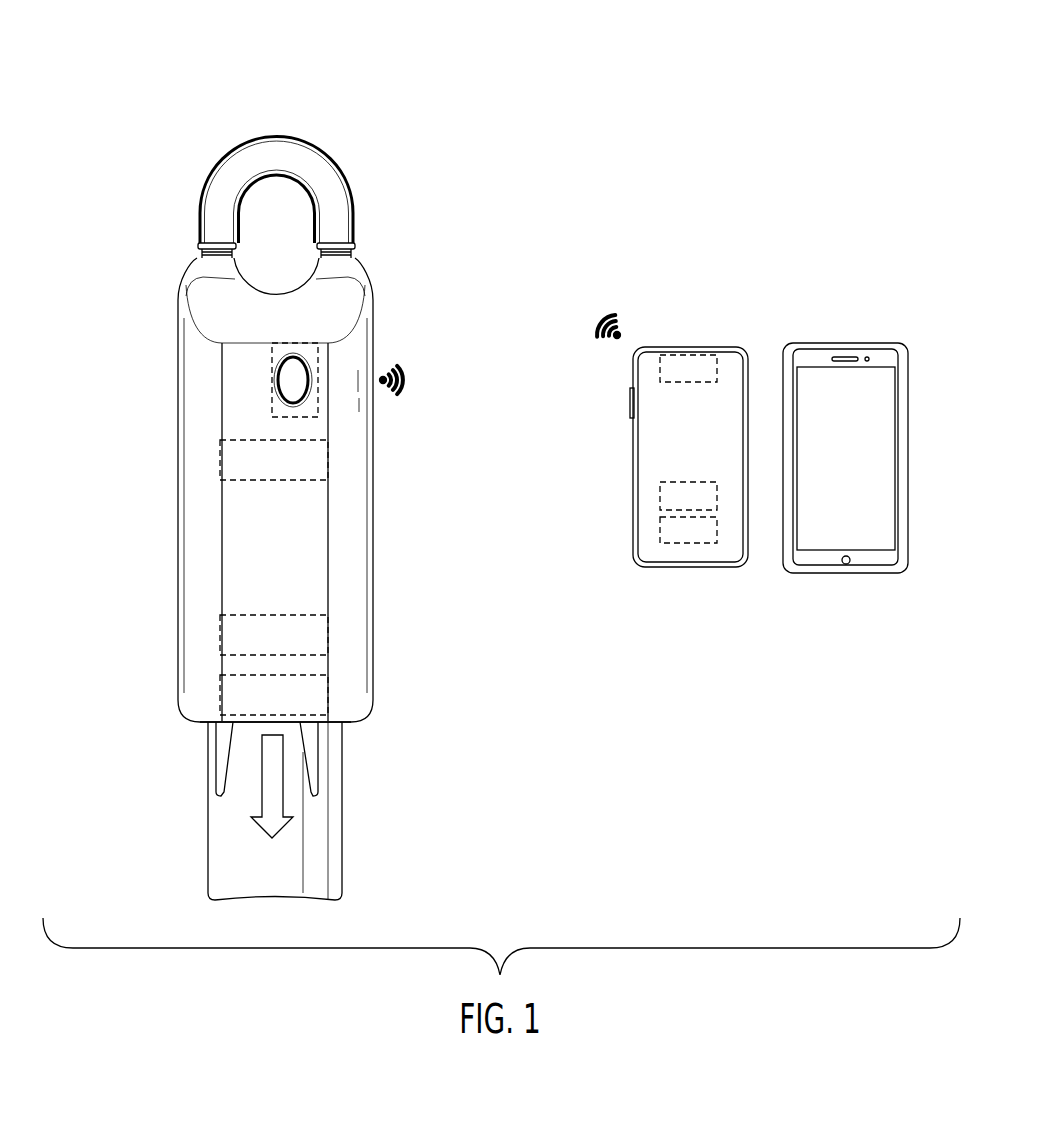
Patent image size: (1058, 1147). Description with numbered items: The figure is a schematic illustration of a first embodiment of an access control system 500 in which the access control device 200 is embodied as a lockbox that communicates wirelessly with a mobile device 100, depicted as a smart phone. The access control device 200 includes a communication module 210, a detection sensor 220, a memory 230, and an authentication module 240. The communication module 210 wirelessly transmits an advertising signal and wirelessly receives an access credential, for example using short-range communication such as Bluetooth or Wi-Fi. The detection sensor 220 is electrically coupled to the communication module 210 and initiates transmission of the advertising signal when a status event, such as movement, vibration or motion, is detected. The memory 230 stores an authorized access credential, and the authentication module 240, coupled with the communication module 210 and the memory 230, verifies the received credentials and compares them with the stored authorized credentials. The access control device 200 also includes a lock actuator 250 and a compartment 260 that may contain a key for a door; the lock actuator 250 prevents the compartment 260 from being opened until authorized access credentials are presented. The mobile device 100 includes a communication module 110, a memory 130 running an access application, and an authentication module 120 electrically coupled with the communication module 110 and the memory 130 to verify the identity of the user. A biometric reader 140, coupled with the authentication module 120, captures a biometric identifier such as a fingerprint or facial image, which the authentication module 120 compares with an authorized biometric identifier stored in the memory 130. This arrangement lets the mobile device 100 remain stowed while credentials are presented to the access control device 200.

The access control system 500 is at (357, 107).
The access control device 200 is at (128, 303).
The communication module 210 is at (313, 378).
The authentication module 240 is at (235, 462).
The memory 230 is at (317, 628).
The detection sensor 220 is at (245, 701).
The lock actuator 250 is at (210, 725).
The compartment 260 is at (287, 891).
The mobile device 100 is at (807, 255).
The communication module 110 is at (693, 366).
The memory 130 is at (668, 498).
The authentication module 120 is at (697, 529).
The biometric reader 140 is at (867, 356).